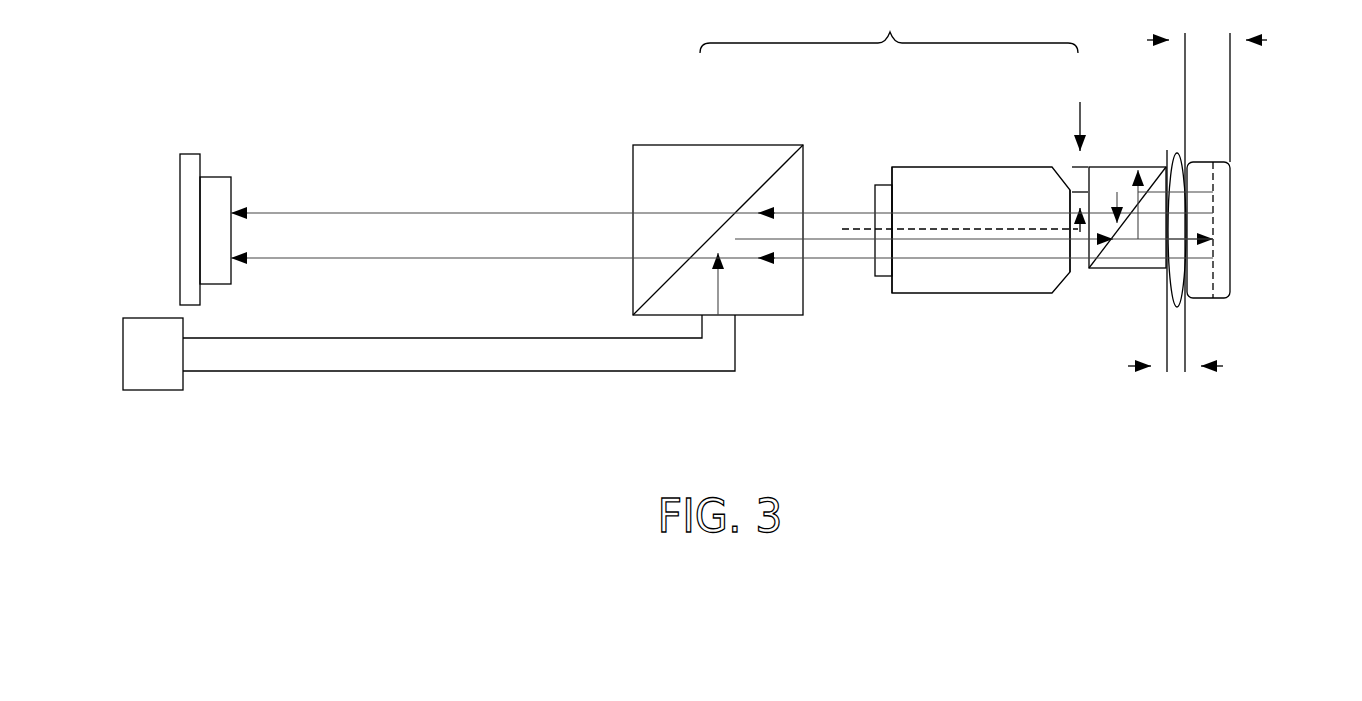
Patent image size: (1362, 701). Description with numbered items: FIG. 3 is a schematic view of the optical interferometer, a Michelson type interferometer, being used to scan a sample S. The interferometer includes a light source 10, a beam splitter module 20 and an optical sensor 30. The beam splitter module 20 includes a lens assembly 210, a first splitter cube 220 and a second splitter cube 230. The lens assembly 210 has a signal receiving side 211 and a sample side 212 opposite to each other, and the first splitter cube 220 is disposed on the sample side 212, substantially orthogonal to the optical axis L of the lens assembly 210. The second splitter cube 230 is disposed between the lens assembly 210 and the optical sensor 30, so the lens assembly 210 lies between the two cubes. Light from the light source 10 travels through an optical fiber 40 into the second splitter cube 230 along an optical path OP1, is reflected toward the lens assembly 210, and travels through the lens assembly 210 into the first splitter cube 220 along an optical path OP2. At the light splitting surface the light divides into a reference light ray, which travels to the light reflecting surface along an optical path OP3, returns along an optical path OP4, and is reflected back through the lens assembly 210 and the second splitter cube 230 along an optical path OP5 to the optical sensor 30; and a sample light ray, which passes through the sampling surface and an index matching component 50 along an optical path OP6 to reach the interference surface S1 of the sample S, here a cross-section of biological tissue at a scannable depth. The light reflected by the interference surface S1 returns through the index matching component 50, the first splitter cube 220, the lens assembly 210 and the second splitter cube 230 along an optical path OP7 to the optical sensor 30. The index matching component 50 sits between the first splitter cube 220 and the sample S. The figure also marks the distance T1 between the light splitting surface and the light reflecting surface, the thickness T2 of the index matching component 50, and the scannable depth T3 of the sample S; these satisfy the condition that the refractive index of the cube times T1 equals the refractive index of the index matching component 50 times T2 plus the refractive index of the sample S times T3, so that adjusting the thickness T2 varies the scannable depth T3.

The light source 10 is at (153, 390).
The beam splitter module 20 is at (889, 29).
The optical sensor 30 is at (217, 160).
The optical fiber 40 is at (474, 360).
The index matching component 50 is at (1176, 136).
The lens assembly 210 is at (947, 151).
The signal receiving side 211 is at (844, 316).
The sample side 212 is at (1082, 303).
The first splitter cube 220 is at (1113, 150).
The second splitter cube 230 is at (718, 130).
The optical axis L is at (965, 232).
The sample S is at (1219, 312).
The interference surface S1 is at (1215, 238).
The distance between light splitting surface and light reflecting surface T1 is at (1066, 167).
The thickness of index matching component T2 is at (1175, 217).
The scannable depth T3 is at (1207, 84).
The optical path OP1 is at (718, 280).
The optical path OP2 is at (853, 240).
The optical path OP3 is at (1167, 192).
The optical path OP4 is at (1117, 195).
The optical path OP5 is at (841, 212).
The optical path OP6 is at (1152, 232).
The optical path OP7 is at (1007, 258).